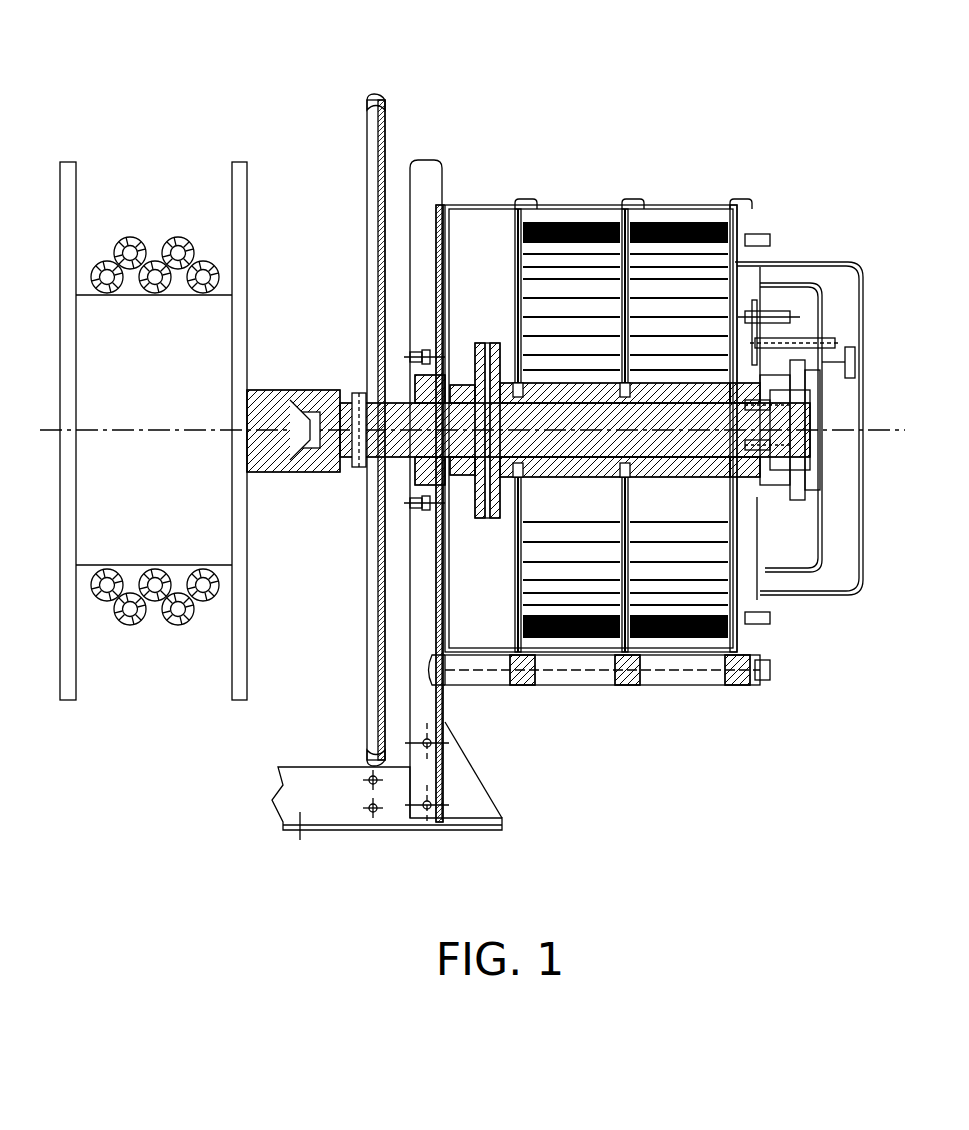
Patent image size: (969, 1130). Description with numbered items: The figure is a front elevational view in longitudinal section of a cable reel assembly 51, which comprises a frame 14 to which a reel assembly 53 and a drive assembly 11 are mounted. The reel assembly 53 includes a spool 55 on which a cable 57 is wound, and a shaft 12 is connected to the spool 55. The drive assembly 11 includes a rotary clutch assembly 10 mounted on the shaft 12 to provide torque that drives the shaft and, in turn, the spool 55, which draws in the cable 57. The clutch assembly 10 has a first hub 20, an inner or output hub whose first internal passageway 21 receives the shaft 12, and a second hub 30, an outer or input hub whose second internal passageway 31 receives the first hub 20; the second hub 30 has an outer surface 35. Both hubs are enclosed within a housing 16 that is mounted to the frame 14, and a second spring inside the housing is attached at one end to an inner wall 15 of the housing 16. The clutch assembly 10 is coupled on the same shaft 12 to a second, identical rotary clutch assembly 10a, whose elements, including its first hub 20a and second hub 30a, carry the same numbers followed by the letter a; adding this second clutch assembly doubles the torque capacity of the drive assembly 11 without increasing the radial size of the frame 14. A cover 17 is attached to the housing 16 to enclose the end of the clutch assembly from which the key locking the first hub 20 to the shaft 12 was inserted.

The drive assembly 11 is at (612, 92).
The rotary clutch assembly 10 is at (574, 190).
The second rotary clutch assembly 10a is at (695, 195).
The housing 16 is at (545, 200).
The inner wall 15 is at (597, 210).
The outer surface 35 is at (593, 383).
The first internal passageway 21 is at (548, 383).
The second hub 30 is at (527, 383).
The second hub of the second clutch assembly 30a is at (712, 383).
The shaft 12 is at (333, 475).
The first hub 20 is at (535, 470).
The second internal passageway 31 is at (580, 480).
The first hub of the second clutch assembly 20a is at (710, 518).
The cover 17 is at (836, 597).
The spool 55 is at (78, 190).
The reel assembly 53 is at (152, 222).
The cable 57 is at (143, 622).
The frame 14 is at (328, 840).
The cable reel assembly 51 is at (608, 812).